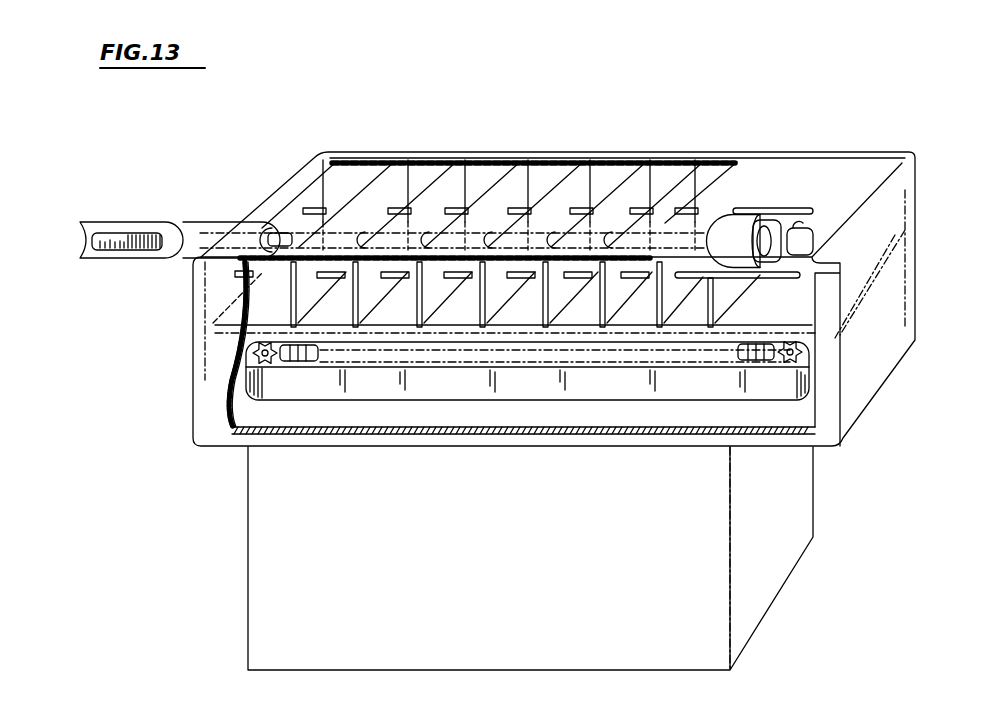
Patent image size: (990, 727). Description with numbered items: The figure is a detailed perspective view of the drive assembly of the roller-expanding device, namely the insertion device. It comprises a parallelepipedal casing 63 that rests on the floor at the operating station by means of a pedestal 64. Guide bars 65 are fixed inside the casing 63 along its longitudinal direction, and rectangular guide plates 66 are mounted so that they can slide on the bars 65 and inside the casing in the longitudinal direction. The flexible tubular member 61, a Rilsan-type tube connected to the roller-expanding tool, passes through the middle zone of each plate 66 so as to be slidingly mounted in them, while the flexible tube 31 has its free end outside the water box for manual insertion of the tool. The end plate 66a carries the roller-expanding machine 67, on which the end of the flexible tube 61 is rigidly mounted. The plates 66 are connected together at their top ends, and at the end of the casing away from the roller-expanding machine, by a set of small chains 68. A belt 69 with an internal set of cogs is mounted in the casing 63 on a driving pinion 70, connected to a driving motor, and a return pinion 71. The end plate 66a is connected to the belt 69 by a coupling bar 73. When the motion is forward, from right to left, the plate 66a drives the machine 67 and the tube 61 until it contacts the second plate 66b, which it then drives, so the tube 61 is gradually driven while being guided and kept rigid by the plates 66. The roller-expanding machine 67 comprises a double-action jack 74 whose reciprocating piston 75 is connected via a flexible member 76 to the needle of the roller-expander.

The flexible tube 31 is at (105, 220).
The flexible tubular member 61 is at (290, 235).
The parallelepipedal casing 63 is at (898, 198).
The pedestal 64 is at (785, 498).
The guide bars 65 is at (460, 210).
The guide plates 66 is at (605, 210).
The end plate 66a is at (752, 200).
The second plate 66b is at (677, 188).
The roller-expanding machine 67 is at (748, 226).
The small chains 68 is at (423, 162).
The belt 69 is at (330, 383).
The driving pinion 70 is at (805, 352).
The return pinion 71 is at (243, 355).
The coupling bar 73 is at (707, 313).
The double-action jack 74 is at (815, 238).
The reciprocating piston 75 is at (793, 218).
The flexible member 76 is at (117, 248).